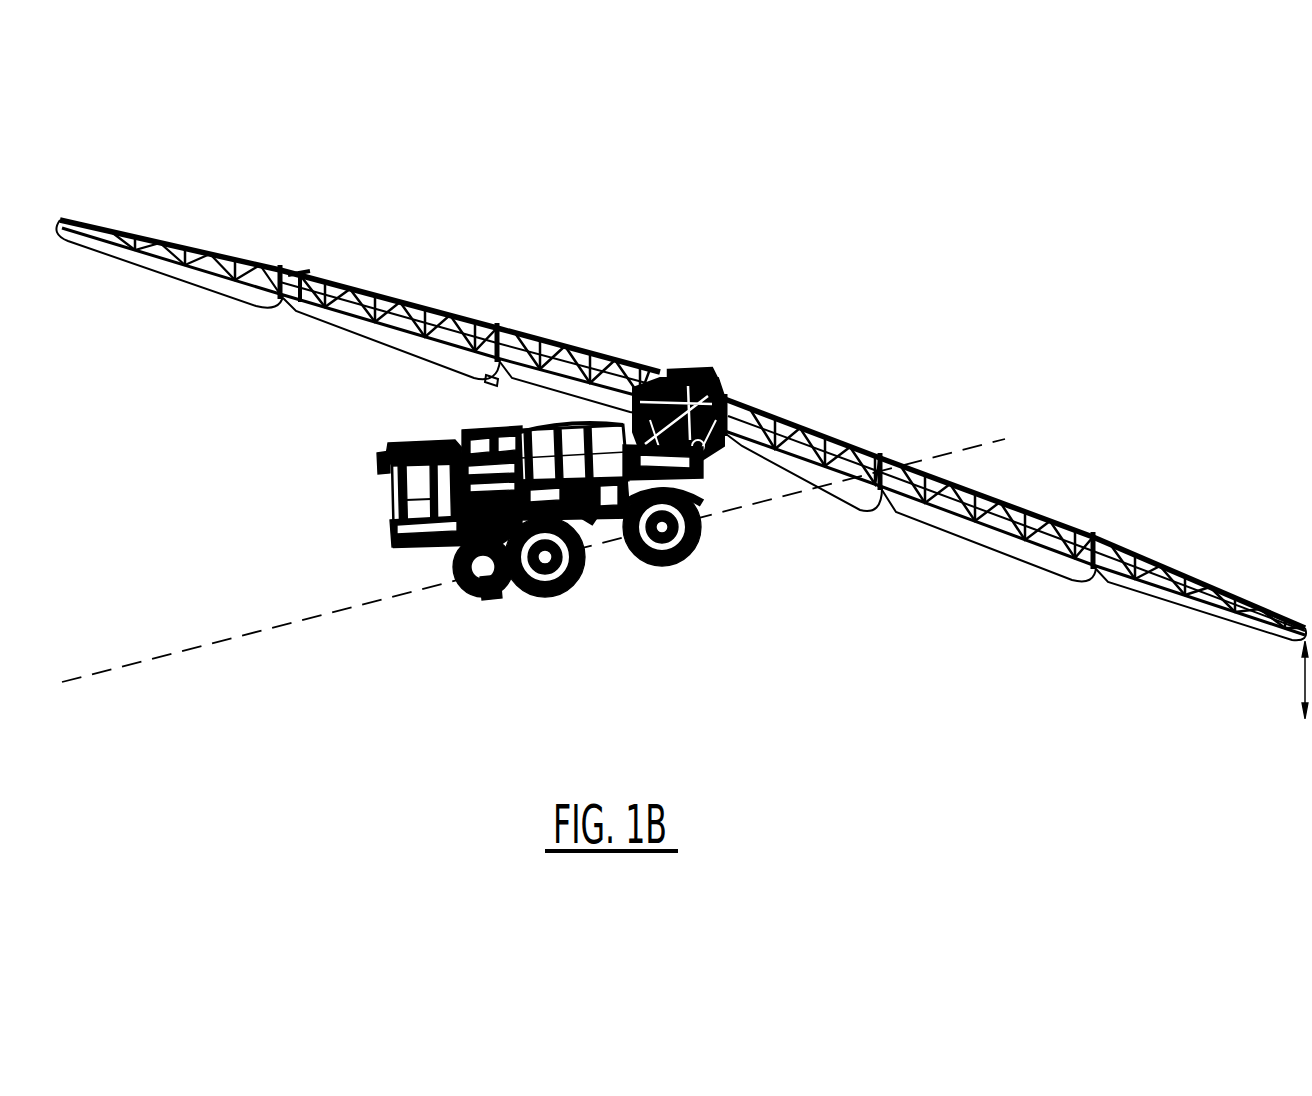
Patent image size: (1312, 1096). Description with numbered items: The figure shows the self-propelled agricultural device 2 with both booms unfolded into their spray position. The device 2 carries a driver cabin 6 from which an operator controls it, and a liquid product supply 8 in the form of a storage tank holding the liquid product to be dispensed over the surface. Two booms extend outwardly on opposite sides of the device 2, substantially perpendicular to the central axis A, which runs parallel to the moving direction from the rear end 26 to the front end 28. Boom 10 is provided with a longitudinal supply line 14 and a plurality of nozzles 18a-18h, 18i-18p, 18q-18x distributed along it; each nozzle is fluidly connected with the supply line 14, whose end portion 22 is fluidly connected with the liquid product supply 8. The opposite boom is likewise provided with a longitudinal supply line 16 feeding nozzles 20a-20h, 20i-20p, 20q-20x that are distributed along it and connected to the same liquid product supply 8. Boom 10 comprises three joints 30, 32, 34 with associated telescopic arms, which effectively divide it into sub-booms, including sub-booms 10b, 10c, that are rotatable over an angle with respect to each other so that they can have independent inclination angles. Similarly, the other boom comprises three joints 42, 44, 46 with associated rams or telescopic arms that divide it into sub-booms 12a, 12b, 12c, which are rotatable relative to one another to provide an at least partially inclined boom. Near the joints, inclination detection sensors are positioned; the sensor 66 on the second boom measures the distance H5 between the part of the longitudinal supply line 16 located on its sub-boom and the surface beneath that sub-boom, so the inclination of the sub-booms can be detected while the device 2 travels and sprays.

The agricultural device 2 is at (818, 232).
The driver cabin 6 is at (393, 500).
The liquid product supply 8 is at (512, 540).
The boom 10 is at (1014, 498).
The sub-boom 10b is at (1011, 501).
The sub-boom 10c is at (1199, 568).
The sub-boom 12a is at (578, 300).
The sub-boom 12b is at (384, 308).
The sub-boom 12c is at (169, 233).
The longitudinal supply line 14 is at (1050, 518).
The longitudinal supply line 16 is at (302, 268).
The nozzles 18a-18h is at (783, 470).
The nozzles 18i-18p is at (968, 533).
The nozzles 18q-18x is at (1185, 603).
The nozzles 20a-20h is at (550, 392).
The nozzles 20i-20p is at (376, 357).
The nozzles 20q-20x is at (158, 272).
The end portion 22 is at (700, 448).
The rear end 26 is at (695, 368).
The front end 28 is at (418, 567).
The joint 30 is at (749, 385).
The joint 32 is at (883, 445).
The joint 34 is at (1097, 527).
The joint 42 is at (684, 358).
The joint 44 is at (490, 311).
The joint 46 is at (278, 261).
The inclination detection sensor 66 is at (493, 380).
The central axis A is at (533, 545).
The distance H5 is at (1288, 680).